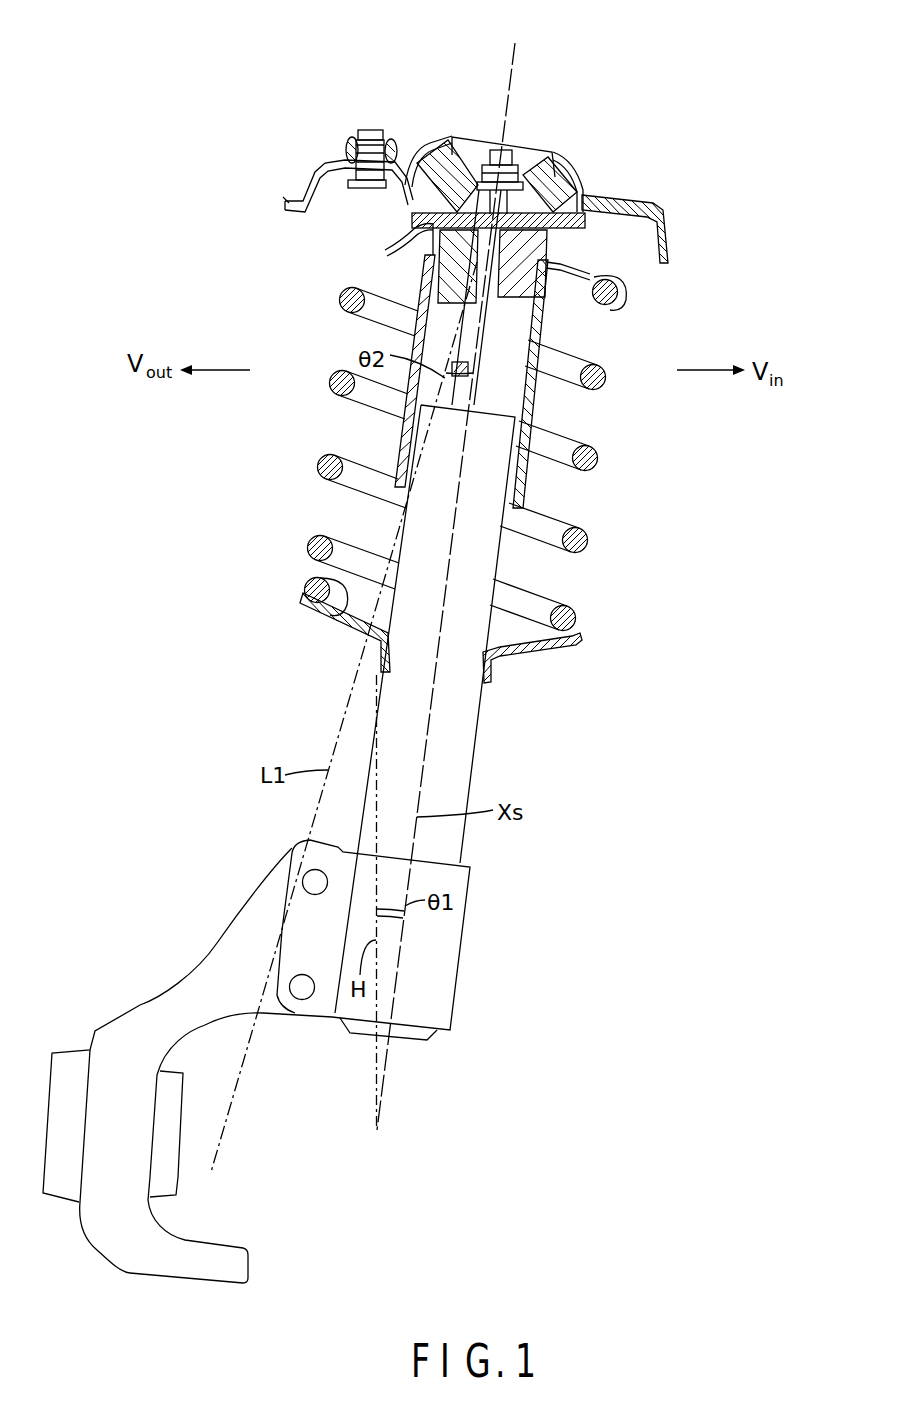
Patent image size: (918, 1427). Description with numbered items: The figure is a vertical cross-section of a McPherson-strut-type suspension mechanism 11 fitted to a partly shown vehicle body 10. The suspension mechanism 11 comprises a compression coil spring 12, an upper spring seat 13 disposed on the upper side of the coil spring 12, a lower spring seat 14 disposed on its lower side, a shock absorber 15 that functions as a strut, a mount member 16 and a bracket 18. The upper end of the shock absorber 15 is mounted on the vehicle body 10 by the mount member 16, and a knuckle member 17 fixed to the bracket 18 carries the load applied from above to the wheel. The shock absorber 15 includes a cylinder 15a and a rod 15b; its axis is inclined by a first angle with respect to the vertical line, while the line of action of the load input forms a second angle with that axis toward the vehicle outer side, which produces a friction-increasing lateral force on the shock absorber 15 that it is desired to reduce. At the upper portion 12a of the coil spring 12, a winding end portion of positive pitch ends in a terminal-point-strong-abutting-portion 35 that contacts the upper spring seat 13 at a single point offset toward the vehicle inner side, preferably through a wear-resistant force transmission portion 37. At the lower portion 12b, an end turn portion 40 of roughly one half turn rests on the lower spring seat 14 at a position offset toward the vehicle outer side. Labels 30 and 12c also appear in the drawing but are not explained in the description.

The suspension mechanism 11 is at (296, 74).
The mount member 16 is at (565, 165).
The vehicle body 10 is at (628, 198).
The upper spring seat 13 is at (578, 266).
The terminal-point-strong-abutting-portion 35 is at (632, 281).
The wear-resistant force transmission portion 37 is at (583, 277).
The upper portion 12a is at (625, 302).
The rod 15b is at (485, 339).
The coil spring upper portion 30 is at (610, 382).
The coil spring 12 is at (610, 463).
The coil spring intermediate portion 12c is at (590, 541).
The shock absorber 15 is at (460, 615).
The lower portion 12b is at (303, 582).
The end turn portion 40 is at (335, 600).
The lower spring seat 14 is at (552, 657).
The cylinder 15a is at (478, 745).
The knuckle member 17 is at (140, 1008).
The bracket 18 is at (303, 1000).